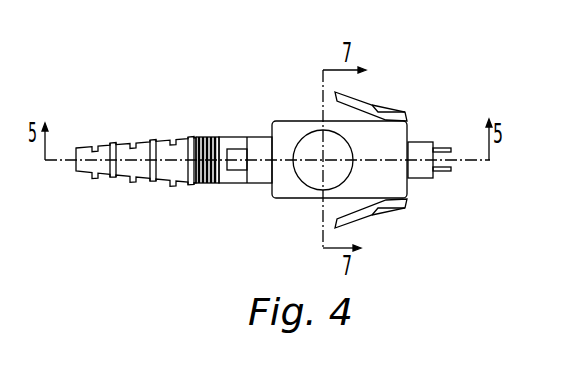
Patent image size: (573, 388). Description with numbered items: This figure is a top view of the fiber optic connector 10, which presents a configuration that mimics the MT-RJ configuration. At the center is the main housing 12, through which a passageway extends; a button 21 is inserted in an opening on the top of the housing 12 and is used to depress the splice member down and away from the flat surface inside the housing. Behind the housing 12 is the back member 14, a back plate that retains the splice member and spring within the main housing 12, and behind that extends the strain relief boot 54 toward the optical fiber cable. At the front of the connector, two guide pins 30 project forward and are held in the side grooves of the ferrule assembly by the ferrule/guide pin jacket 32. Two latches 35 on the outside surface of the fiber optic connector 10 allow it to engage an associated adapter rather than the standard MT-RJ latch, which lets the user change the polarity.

The fiber optic connector 10 is at (236, 92).
The main housing 12 is at (291, 120).
The back member 14 is at (268, 190).
The button 21 is at (318, 188).
The guide pins 30 is at (452, 170).
The ferrule/guide pin jacket 32 is at (423, 180).
The latches 35 is at (360, 100).
The strain relief boot 54 is at (160, 181).